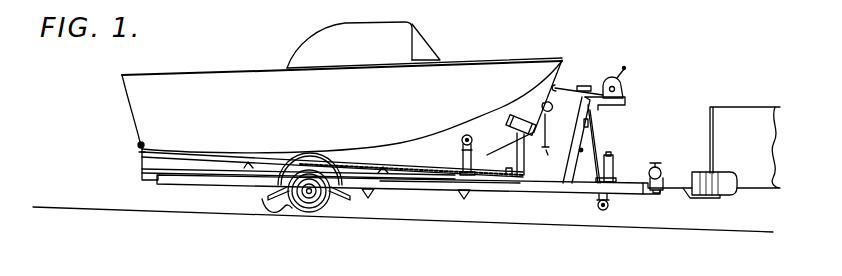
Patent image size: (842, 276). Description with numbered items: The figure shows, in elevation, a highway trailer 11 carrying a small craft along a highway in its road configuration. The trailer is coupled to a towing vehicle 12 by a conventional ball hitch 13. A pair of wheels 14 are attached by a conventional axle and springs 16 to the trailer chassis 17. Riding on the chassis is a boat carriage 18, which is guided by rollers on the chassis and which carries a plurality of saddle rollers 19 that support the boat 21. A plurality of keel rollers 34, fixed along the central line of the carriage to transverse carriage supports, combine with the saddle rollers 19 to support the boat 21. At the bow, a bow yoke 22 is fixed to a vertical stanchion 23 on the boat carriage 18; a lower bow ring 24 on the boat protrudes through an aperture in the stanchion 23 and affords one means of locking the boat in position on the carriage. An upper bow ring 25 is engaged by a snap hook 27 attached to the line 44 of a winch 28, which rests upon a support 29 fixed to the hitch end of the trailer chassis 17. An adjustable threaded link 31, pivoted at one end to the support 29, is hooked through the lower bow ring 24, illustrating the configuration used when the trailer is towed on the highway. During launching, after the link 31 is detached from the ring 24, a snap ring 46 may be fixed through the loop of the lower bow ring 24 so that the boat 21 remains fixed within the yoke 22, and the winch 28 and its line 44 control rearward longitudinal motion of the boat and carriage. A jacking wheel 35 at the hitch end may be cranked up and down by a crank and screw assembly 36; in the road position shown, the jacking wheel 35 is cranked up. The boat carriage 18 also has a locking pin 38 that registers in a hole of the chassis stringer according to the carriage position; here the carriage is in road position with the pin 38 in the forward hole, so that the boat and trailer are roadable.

The highway trailer 11 is at (562, 196).
The towing vehicle 12 is at (743, 115).
The ball hitch 13 is at (665, 172).
The wheels 14 is at (290, 211).
The axle and springs 16 is at (347, 195).
The trailer chassis 17 is at (500, 188).
The boat carriage 18 is at (448, 176).
The saddle rollers 19 is at (147, 146).
The boat 21 is at (470, 80).
The bow yoke 22 is at (508, 117).
The vertical stanchion 23 is at (526, 157).
The lower bow ring 24 is at (533, 103).
The upper bow ring 25 is at (557, 85).
The snap hook 27 is at (582, 86).
The winch 28 is at (623, 79).
The support 29 is at (593, 108).
The adjustable threaded link 31 is at (546, 150).
The keel rollers 34 is at (252, 162).
The jacking wheel 35 is at (611, 204).
The crank and screw assembly 36 is at (616, 167).
The locking pin 38 is at (511, 174).
The winch line 44 is at (603, 78).
The snap ring 46 is at (574, 155).